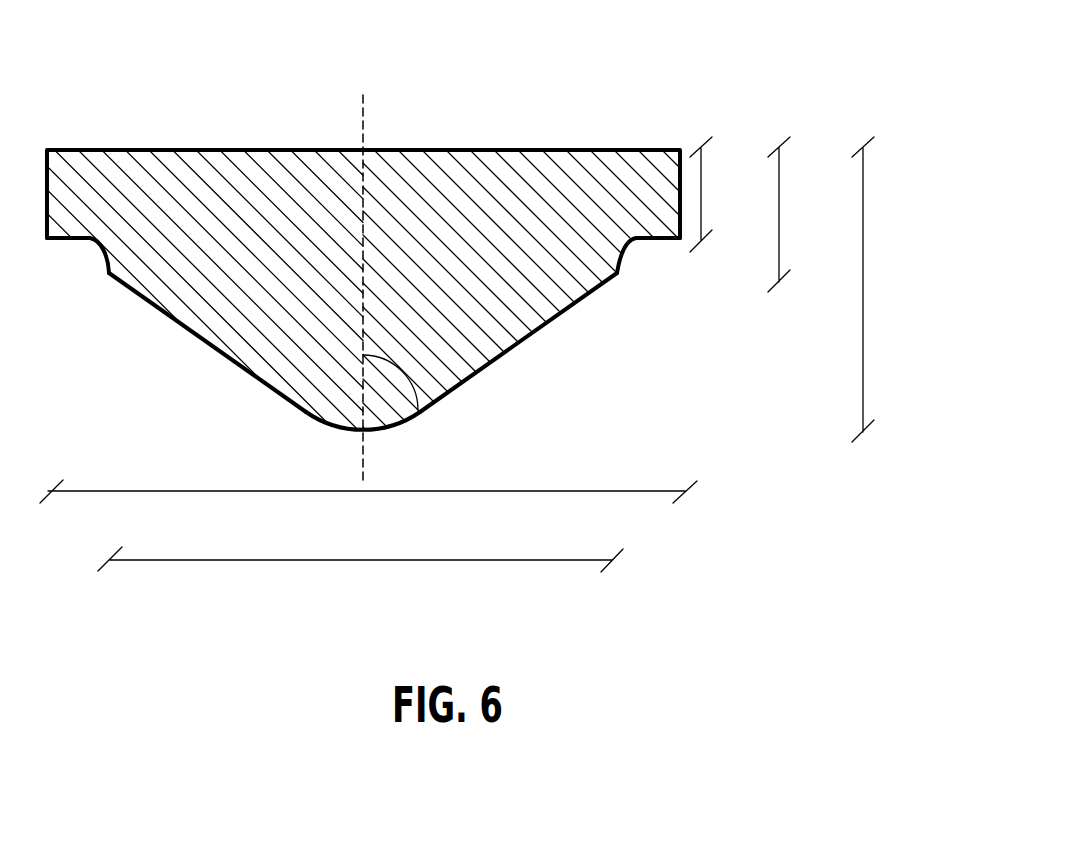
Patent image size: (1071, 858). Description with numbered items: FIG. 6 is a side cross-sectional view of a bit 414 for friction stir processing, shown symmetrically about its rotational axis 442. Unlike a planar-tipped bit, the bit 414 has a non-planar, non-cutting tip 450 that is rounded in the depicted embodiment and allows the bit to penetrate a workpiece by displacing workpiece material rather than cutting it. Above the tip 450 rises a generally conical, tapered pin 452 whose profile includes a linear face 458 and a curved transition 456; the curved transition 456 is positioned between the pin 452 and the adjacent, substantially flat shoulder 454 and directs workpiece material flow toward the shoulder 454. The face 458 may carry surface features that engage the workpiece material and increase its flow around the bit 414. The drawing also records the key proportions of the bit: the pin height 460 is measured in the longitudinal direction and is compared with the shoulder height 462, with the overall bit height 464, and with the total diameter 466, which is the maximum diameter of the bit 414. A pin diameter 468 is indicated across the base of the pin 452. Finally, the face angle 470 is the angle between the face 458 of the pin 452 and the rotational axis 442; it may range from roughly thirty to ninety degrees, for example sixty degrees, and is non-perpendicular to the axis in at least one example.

The bit 414 is at (828, 62).
The rotational axis 442 is at (359, 460).
The tip 450 is at (362, 431).
The pin 452 is at (223, 353).
The shoulder 454 is at (87, 240).
The curved transition 456 is at (624, 266).
The face 458 is at (510, 349).
The pin height 460 is at (781, 194).
The shoulder height 462 is at (703, 194).
The bit height 464 is at (865, 194).
The total diameter 466 is at (88, 492).
The pin diameter 468 is at (170, 562).
The face angle 470 is at (417, 391).